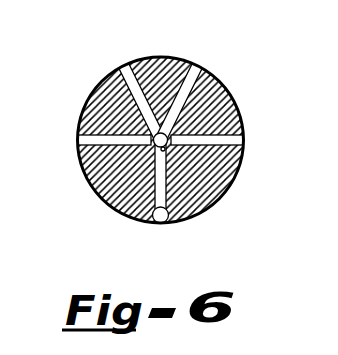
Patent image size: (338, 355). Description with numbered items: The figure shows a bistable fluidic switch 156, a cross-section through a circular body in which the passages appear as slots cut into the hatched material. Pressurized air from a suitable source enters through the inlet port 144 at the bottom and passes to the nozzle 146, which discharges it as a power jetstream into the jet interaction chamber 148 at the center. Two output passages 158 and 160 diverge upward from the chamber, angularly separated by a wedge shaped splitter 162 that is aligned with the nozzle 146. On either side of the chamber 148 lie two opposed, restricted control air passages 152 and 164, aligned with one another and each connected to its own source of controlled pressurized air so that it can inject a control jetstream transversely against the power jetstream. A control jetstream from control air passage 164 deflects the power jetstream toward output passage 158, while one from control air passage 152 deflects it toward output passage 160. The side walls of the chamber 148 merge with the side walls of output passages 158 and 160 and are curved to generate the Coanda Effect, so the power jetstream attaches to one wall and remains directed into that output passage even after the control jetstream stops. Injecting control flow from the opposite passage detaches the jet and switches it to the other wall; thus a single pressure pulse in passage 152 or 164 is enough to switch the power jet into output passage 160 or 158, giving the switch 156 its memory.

The inlet port 144 is at (170, 225).
The nozzle 146 is at (165, 150).
The jet interaction chamber 148 is at (153, 133).
The control air passage 152 is at (90, 140).
The bistable fluidic switch 156 is at (173, 142).
The output passage 158 is at (133, 85).
The output passage 160 is at (183, 87).
The wedge shaped splitter 162 is at (160, 72).
The control air passage 164 is at (232, 142).